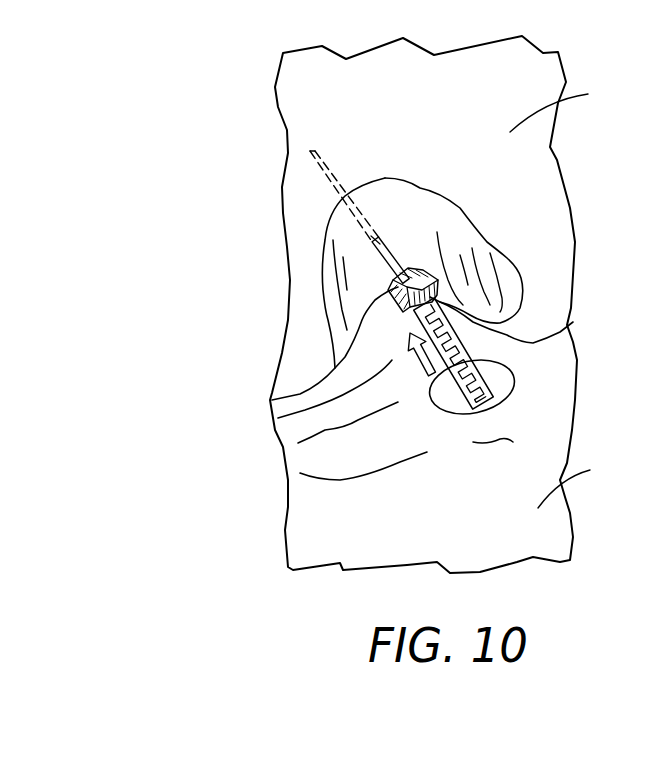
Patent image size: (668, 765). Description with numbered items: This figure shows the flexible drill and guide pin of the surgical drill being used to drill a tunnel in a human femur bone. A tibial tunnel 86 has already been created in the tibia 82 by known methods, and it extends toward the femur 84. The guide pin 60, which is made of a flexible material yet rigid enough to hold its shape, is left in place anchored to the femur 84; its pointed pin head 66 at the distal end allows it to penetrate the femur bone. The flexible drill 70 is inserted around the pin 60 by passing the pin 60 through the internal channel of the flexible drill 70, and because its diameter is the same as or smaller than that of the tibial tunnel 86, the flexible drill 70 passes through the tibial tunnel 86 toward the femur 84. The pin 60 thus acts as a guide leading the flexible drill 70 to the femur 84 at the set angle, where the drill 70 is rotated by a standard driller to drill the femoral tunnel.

The guide pin 60 is at (392, 261).
The pin head 66 is at (303, 157).
The flexible drill 70 is at (505, 325).
The tibia 82 is at (583, 479).
The femur 84 is at (568, 104).
The tibial tunnel 86 is at (515, 372).